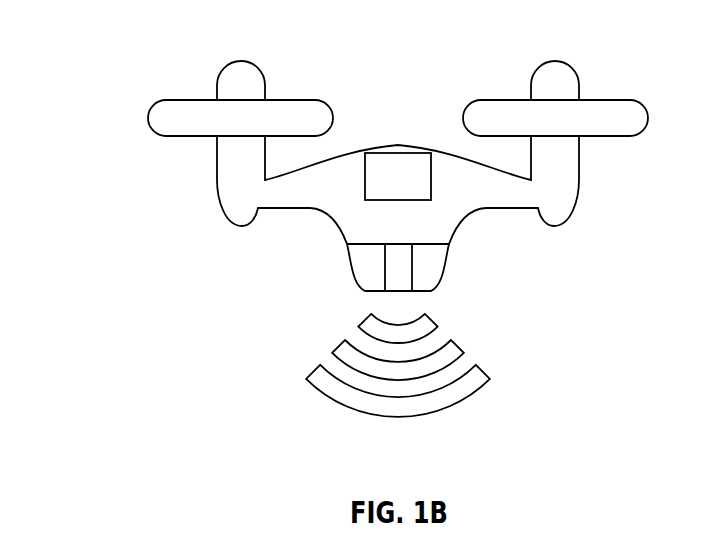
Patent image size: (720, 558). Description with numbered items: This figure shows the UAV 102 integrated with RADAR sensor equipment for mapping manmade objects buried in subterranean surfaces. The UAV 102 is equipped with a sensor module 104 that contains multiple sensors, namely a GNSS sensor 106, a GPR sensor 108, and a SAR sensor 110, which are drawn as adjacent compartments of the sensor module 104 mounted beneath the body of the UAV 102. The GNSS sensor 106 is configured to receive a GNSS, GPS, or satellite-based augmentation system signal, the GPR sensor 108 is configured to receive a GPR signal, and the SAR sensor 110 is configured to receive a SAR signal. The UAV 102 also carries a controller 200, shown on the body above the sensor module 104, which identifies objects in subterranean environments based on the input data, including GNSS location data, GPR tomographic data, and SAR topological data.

The UAV 102 is at (354, 208).
The controller 200 is at (397, 152).
The sensor module 104 is at (395, 273).
The GNSS sensor 106 is at (372, 277).
The GPR sensor 108 is at (398, 267).
The SAR sensor 110 is at (433, 267).